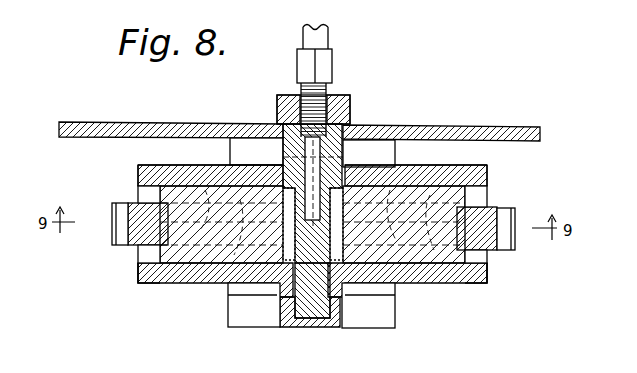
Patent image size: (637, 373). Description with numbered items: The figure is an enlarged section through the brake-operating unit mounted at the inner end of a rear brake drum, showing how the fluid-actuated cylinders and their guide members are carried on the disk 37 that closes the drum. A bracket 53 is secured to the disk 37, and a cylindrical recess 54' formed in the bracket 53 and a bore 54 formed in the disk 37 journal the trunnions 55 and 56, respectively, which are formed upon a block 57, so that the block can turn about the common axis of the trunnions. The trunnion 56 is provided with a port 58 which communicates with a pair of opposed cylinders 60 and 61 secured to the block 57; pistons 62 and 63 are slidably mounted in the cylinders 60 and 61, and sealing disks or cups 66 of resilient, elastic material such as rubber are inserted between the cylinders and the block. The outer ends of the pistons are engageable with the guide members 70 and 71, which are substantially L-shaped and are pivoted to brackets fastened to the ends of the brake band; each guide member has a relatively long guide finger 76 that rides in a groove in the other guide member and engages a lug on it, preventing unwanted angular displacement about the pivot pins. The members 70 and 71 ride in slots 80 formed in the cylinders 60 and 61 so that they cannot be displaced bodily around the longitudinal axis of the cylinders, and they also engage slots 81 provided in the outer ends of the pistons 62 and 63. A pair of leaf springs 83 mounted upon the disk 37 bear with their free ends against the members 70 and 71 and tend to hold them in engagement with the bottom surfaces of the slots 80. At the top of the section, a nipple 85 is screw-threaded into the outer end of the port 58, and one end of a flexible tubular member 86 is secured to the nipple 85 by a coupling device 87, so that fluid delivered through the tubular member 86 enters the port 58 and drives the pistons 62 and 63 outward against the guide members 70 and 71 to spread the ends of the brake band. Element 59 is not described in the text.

The disk 37 is at (152, 123).
The bracket 53 is at (375, 313).
The bore 54 is at (318, 309).
The cylindrical recess 54' is at (337, 183).
The trunnion 55 is at (310, 318).
The trunnion 56 is at (347, 111).
The block 57 is at (275, 294).
The port 58 is at (344, 160).
The bearing 59 is at (350, 177).
The cylinder 60 is at (187, 274).
The cylinder 61 is at (453, 278).
The piston 62 is at (213, 251).
The piston 63 is at (427, 264).
The sealing disk 66 is at (276, 200).
The guide member 70 is at (140, 245).
The guide member 71 is at (490, 248).
The guide finger 76 is at (425, 181).
The slot 80 is at (146, 203).
The slot 81 is at (163, 271).
The leaf spring 83 is at (120, 230).
The nipple 85 is at (329, 87).
The flexible tubular member 86 is at (322, 38).
The coupling device 87 is at (330, 59).